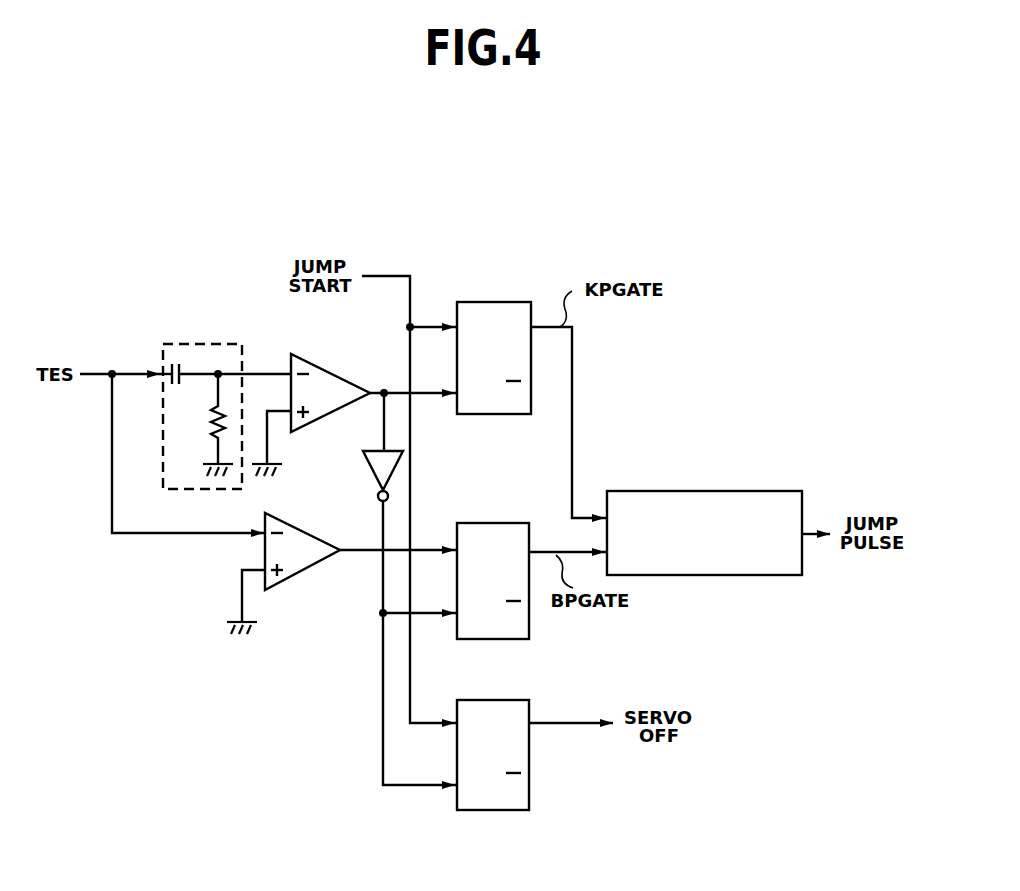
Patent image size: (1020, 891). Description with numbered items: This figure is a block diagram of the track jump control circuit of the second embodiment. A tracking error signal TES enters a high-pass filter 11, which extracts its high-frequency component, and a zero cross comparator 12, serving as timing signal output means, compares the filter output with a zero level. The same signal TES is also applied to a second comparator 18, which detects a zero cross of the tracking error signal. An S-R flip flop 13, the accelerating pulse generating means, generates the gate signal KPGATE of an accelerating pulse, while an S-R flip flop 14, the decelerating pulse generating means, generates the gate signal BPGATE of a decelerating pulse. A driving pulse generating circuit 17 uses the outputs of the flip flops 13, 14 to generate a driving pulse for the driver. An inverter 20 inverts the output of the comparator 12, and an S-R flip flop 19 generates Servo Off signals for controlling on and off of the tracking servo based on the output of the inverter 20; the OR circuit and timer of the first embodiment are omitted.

The high-pass filter 11 is at (170, 344).
The zero cross comparator 12 is at (320, 367).
The S-R flip flop 13 is at (510, 302).
The S-R flip flop 14 is at (468, 640).
The driving pulse generating circuit 17 is at (637, 491).
The second comparator 18 is at (300, 575).
The S-R flip flop 19 is at (510, 700).
The inverter 20 is at (365, 455).